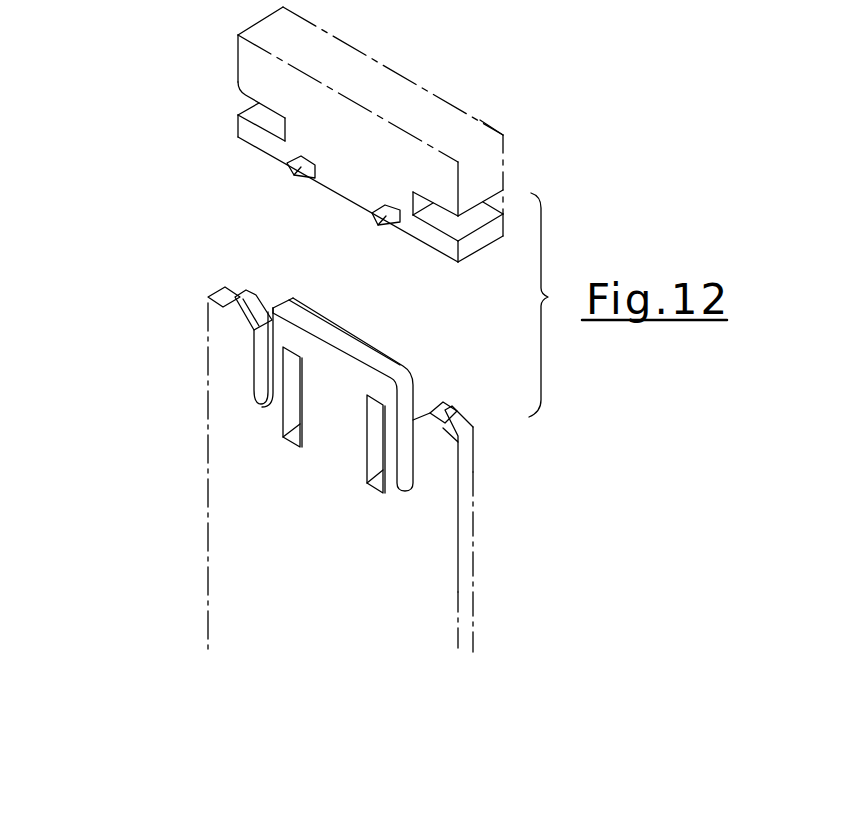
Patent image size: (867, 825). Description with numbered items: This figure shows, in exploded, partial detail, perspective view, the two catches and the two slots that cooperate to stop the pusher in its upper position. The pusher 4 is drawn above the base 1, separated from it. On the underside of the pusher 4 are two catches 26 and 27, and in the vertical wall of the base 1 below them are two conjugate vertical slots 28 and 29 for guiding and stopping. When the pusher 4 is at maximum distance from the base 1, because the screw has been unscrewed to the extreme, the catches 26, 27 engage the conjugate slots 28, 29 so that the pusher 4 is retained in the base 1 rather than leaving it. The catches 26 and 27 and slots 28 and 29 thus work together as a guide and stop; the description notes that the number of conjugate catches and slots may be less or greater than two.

The base 1 is at (319, 471).
The pusher 4 is at (408, 147).
The catch 26 is at (300, 166).
The catch 27 is at (386, 215).
The vertical slot 28 is at (293, 382).
The vertical slot 29 is at (377, 435).